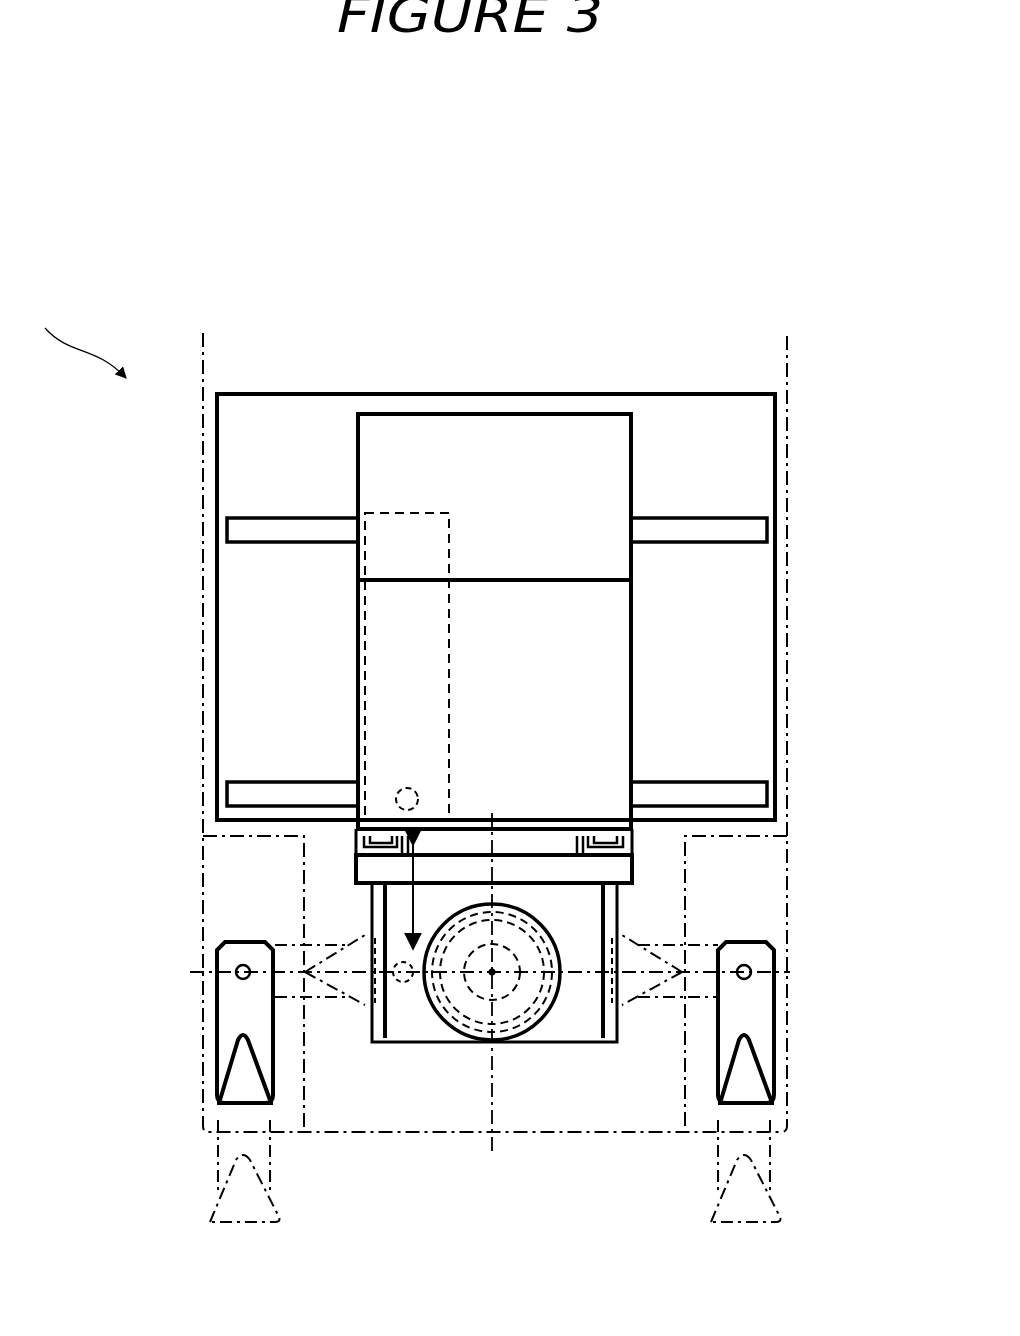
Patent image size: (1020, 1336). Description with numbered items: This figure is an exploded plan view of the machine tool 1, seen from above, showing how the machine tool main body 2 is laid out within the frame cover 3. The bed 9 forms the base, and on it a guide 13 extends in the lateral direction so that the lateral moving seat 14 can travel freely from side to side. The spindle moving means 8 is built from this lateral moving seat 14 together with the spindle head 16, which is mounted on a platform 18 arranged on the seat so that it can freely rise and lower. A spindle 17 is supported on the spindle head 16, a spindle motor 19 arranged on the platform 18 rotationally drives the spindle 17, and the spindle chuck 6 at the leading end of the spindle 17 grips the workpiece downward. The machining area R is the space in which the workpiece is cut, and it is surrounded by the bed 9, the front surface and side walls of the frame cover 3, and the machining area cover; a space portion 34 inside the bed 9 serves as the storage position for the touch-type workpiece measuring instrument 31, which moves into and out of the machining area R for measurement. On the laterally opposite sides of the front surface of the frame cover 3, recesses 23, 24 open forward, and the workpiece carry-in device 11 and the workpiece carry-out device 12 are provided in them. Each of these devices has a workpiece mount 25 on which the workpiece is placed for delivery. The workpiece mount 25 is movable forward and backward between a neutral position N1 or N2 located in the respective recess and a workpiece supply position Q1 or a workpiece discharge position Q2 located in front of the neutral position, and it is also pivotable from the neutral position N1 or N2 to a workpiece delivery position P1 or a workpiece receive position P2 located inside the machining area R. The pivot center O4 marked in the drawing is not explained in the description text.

The display device 1 is at (77, 345).
The machine tool main body 2 is at (781, 576).
The frame cover 3 is at (203, 452).
The spindle chuck 6 is at (432, 1042).
The spindle moving means 8 is at (642, 712).
The bed 9 is at (738, 432).
The workpiece carry-in device 11 is at (778, 1012).
The workpiece carry-out device 12 is at (213, 1017).
The guide 13 is at (725, 513).
The lateral moving seat 14 is at (600, 628).
The spindle head 16 is at (407, 1042).
The spindle 17 is at (508, 1042).
The platform 18 is at (603, 1042).
The spindle motor 19 is at (543, 1035).
The recess 23 is at (760, 893).
The recess 24 is at (230, 893).
The workpiece mount 25 is at (225, 1093).
The workpiece measuring instrument 31 is at (400, 985).
The space portion 34 is at (365, 645).
The neutral position N1 is at (775, 1073).
The neutral position N2 is at (214, 1073).
The wheel center O4 is at (492, 972).
The workpiece delivery position P1 is at (620, 1007).
The workpiece receive position P2 is at (367, 1007).
The workpiece supply position Q1 is at (755, 1222).
The workpiece discharge position Q2 is at (230, 1222).
The machining area R is at (472, 1091).